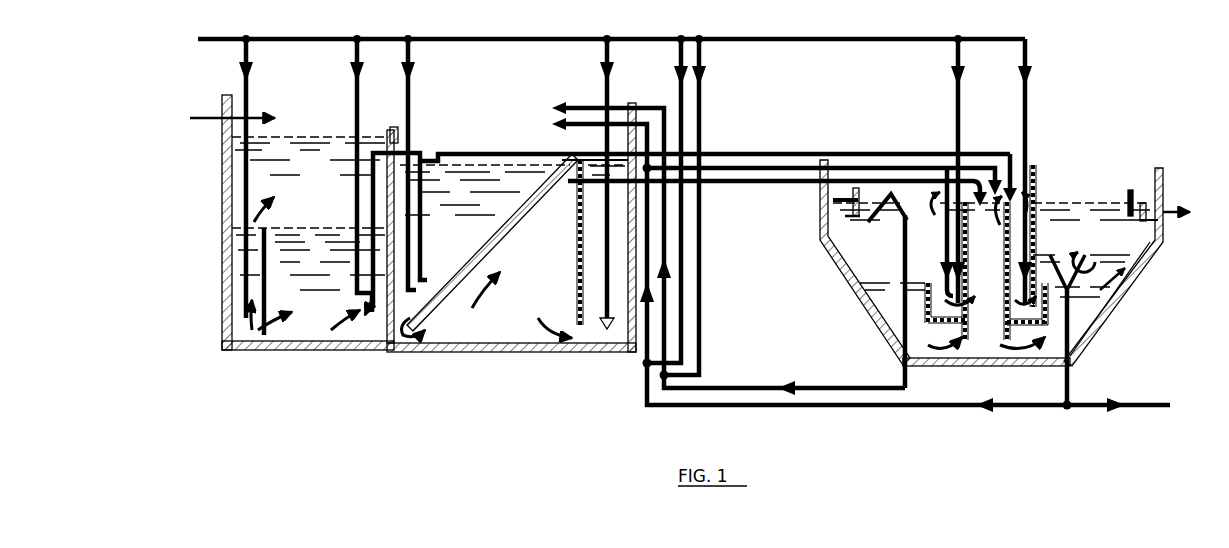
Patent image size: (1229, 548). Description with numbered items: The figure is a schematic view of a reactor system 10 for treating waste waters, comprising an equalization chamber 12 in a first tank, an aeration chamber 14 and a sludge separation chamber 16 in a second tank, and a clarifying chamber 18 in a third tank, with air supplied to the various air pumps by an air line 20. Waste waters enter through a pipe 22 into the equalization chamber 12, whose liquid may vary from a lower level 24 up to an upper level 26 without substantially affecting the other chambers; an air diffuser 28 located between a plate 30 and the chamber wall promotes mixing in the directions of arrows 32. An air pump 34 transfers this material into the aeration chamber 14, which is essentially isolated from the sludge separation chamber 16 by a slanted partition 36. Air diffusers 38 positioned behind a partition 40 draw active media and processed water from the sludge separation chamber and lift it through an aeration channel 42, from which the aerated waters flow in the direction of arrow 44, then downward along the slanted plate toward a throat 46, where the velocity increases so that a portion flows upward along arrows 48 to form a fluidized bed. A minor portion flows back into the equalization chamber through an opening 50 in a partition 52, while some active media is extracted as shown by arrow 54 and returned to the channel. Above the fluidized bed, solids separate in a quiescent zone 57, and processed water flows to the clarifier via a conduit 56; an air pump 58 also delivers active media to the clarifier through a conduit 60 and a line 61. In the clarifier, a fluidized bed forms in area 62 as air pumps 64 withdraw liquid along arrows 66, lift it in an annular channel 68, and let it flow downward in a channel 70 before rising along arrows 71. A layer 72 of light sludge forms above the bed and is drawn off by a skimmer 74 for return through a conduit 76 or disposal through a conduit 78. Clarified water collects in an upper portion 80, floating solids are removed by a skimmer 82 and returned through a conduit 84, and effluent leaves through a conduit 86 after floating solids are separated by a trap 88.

The reactor system 10 is at (478, 431).
The equalization chamber 12 is at (305, 358).
The aeration chamber 14 is at (466, 108).
The sludge separation chamber 16 is at (519, 364).
The clarifying chamber 18 is at (1083, 113).
The air line 20 is at (300, 37).
The pipe 22 is at (211, 117).
The level 24 is at (233, 212).
The level 26 is at (301, 135).
The air diffuser 28 is at (240, 298).
The plate 30 is at (273, 277).
The arrows 32 is at (286, 263).
The air pump 34 is at (351, 314).
The slanted partition 36 is at (487, 239).
The air diffusers 38 is at (606, 331).
The partition 40 is at (586, 218).
The aeration channel 42 is at (578, 232).
The arrow 44 is at (512, 160).
The throat 46 is at (393, 350).
The arrows 48 is at (486, 291).
The opening 50 is at (366, 186).
The partition 52 is at (394, 127).
The arrow 54 is at (488, 323).
The conduit 56 is at (779, 184).
The quiescent zone 57 is at (585, 191).
The air pump 58 is at (413, 270).
The conduit 60 is at (481, 152).
The line 61 is at (742, 166).
The fluidized bed area 62 is at (1094, 300).
The air pumps 64 is at (1024, 259).
The arrows 66 is at (948, 266).
The annular channel 68 is at (1036, 187).
The channel 70 is at (1010, 271).
The arrows 71 is at (991, 325).
The layer 72 is at (1116, 277).
The skimmer 74 is at (1089, 256).
The conduit 76 is at (884, 408).
The conduit 78 is at (1165, 409).
The upper portion 80 is at (866, 220).
The skimmer 82 is at (896, 220).
The conduit 84 is at (754, 386).
The conduit 86 is at (1166, 208).
The trap 88 is at (1129, 191).